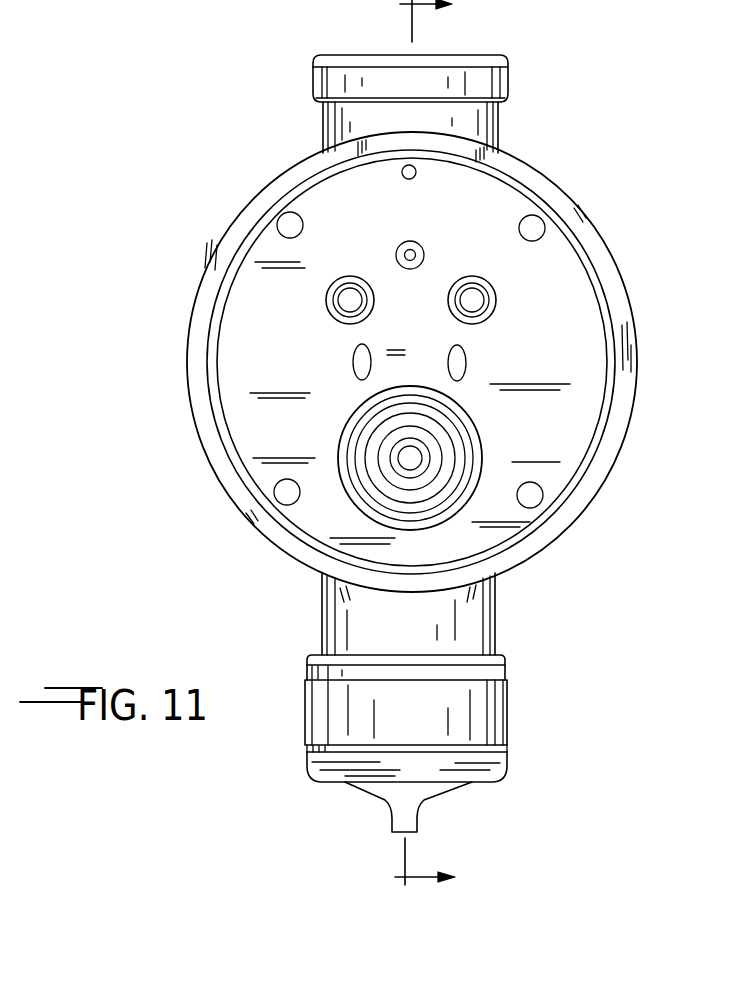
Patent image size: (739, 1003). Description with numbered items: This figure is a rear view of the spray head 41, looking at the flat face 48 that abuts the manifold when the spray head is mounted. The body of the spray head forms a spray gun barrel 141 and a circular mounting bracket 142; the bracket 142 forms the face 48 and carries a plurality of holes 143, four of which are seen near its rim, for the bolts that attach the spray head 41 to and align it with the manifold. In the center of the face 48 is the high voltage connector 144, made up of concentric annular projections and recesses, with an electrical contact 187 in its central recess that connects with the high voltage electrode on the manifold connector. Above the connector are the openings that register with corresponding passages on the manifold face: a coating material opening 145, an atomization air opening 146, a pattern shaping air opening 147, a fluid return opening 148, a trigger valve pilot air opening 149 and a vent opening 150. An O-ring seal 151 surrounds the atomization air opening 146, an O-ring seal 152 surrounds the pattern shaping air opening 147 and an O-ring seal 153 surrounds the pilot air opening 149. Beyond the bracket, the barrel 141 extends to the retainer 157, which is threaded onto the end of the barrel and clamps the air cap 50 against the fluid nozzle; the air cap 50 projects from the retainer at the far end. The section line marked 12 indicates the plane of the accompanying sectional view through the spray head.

The section line 12- 12 is at (432, 451).
The spray head 41 is at (295, 572).
The flat face 48 is at (565, 445).
The air cap 50 is at (418, 815).
The spray gun barrel 141 is at (496, 608).
The circular mounting bracket 142 is at (612, 262).
The holes 143 is at (282, 214).
The high voltage connector 144 is at (483, 455).
The coating material opening 145 is at (352, 360).
The atomization air opening 146 is at (485, 297).
The pattern shaping air opening 147 is at (342, 298).
The fluid return opening 148 is at (467, 358).
The trigger valve pilot air opening 149 is at (410, 258).
The vent opening 150 is at (402, 176).
The O-ring seal 151 is at (478, 278).
The O-ring seal 152 is at (358, 278).
The O-ring seal 153 is at (422, 244).
The retainer 157 is at (508, 712).
The electrical contact 187 is at (395, 450).